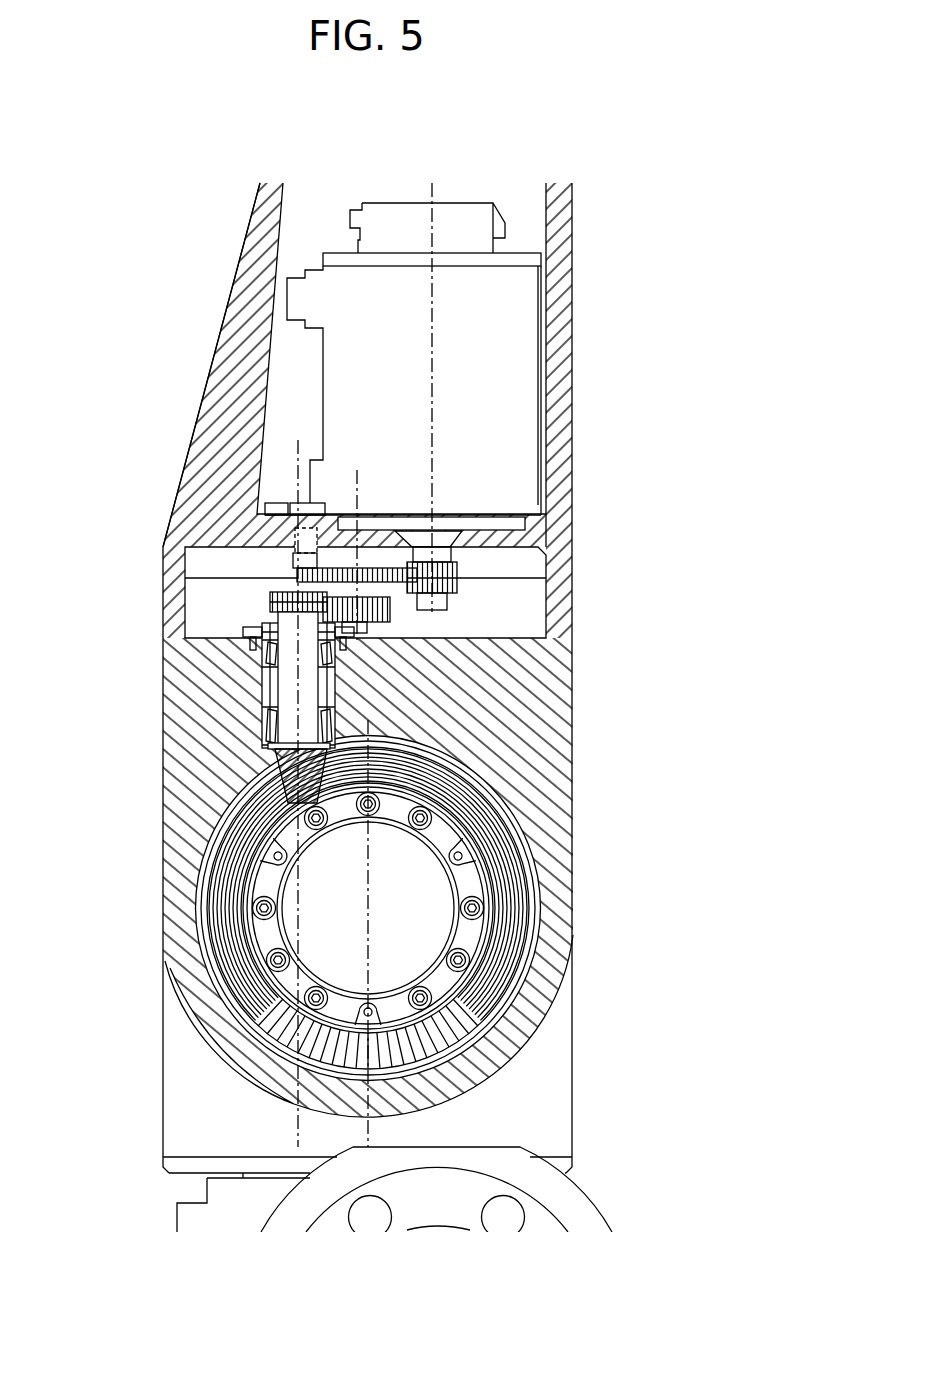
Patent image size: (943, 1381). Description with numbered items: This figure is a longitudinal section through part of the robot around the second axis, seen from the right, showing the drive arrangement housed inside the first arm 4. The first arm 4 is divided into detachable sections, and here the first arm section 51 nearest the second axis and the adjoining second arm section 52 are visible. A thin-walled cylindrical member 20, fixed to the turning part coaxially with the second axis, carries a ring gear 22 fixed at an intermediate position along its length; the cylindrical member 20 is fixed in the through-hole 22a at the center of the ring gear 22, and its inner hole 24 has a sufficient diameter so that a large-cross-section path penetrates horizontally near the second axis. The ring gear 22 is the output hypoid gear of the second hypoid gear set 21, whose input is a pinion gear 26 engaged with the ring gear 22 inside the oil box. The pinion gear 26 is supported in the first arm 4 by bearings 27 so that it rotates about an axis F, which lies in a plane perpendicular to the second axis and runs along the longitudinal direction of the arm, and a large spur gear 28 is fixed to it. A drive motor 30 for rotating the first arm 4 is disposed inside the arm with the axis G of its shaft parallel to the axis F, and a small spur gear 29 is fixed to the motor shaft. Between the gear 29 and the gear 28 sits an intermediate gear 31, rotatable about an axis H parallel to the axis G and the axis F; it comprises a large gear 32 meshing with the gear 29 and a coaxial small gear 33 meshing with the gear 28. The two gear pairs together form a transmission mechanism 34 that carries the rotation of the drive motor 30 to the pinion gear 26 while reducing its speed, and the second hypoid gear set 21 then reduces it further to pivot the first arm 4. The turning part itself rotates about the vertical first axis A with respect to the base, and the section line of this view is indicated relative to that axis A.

The first arm 4 is at (212, 315).
The second arm section 52 is at (206, 385).
The first arm section 51 is at (165, 858).
The drive motor 30 is at (541, 318).
The transmission mechanism 34 is at (197, 572).
The intermediate gear 31 is at (396, 581).
The large gear 32 is at (440, 617).
The small gear 33 is at (440, 672).
The gear 29 is at (475, 547).
The gear 28 is at (272, 601).
The bearings 27 is at (262, 652).
The pinion gear 26 is at (270, 772).
The ring gear 22 is at (235, 962).
The through-hole 22a is at (490, 790).
The second hypoid gear set 21 is at (331, 809).
The cylindrical member 20 is at (470, 880).
The inner hole 24 is at (455, 942).
The axis G is at (432, 226).
The axis H is at (357, 500).
The axis F is at (298, 1127).
The first axis A is at (372, 1130).